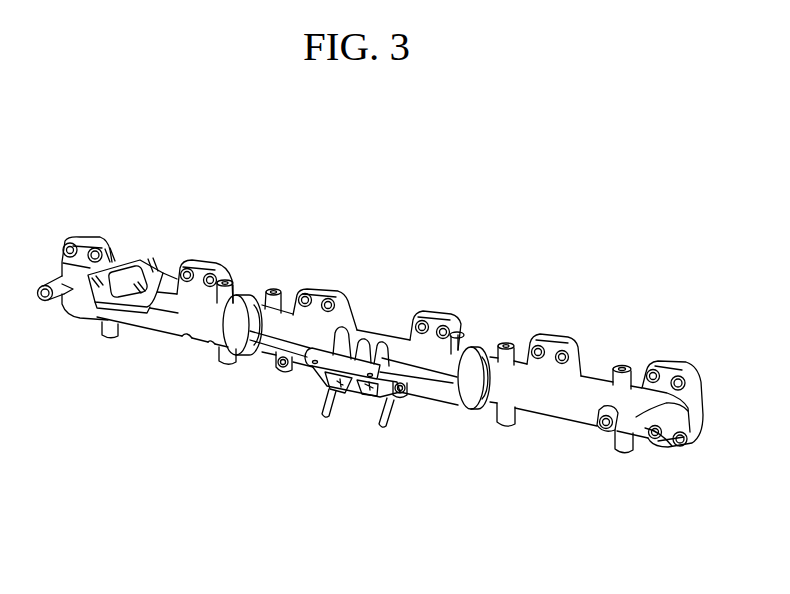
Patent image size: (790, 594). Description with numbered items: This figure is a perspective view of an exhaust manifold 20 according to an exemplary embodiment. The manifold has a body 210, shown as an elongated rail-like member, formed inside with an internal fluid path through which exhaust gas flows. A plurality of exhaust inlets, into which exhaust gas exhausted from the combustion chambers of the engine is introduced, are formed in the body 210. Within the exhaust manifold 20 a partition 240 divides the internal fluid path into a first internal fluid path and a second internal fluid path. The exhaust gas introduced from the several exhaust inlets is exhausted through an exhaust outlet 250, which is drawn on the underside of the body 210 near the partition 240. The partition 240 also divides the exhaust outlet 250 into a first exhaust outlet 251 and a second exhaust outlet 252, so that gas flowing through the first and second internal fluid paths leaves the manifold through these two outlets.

The exhaust manifold 20 is at (550, 260).
The body 210 is at (587, 393).
The partition 240 is at (342, 376).
The exhaust outlet 250 is at (368, 493).
The first exhaust outlet 251 is at (323, 399).
The second exhaust outlet 252 is at (369, 396).